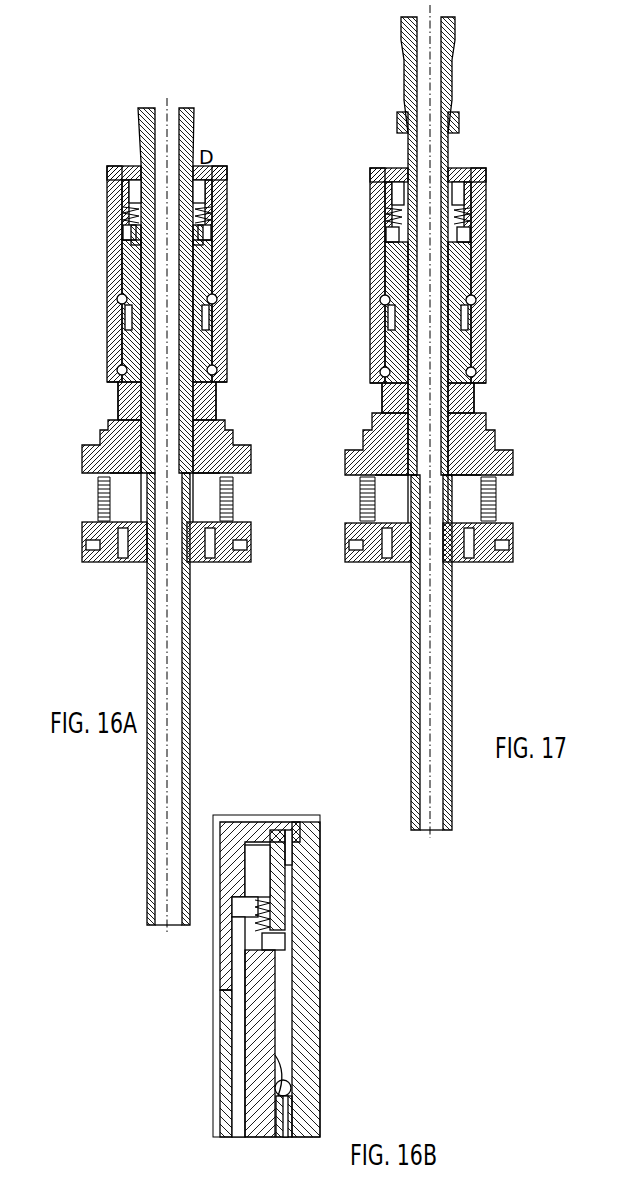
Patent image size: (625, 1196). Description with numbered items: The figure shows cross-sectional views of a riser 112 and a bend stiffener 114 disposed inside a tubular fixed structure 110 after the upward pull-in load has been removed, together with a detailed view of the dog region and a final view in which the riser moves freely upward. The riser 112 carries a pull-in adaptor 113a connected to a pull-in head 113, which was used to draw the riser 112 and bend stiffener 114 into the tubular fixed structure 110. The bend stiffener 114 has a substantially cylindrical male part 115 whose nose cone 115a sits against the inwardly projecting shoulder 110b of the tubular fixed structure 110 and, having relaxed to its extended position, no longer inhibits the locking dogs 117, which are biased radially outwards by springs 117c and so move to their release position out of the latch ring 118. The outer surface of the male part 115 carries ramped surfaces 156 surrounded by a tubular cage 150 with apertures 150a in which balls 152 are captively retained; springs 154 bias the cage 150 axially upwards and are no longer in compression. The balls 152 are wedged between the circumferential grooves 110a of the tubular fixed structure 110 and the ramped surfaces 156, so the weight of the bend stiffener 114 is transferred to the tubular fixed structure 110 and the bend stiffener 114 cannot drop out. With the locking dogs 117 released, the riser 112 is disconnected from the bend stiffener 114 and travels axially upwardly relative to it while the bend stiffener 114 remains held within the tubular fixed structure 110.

In FIG. 16A, the tubular fixed structure 110 is at (107, 322).
In FIG. 17, the tubular fixed structure 110 is at (499, 277).
In FIG. 16B, the tubular fixed structure 110 is at (319, 978).
In FIG. 16A, the circumferential grooves 110a is at (216, 302).
In FIG. 17, the circumferential grooves 110a is at (476, 303).
In FIG. 16A, the inwardly projecting shoulder 110b is at (118, 168).
In FIG. 17, the inwardly projecting shoulder 110b is at (385, 168).
In FIG. 16A, the riser 112 is at (191, 686).
In FIG. 17, the riser 112 is at (453, 680).
In FIG. 16B, the riser 112 is at (228, 1100).
In FIG. 16A, the pull-in head 113 is at (194, 116).
In FIG. 17, the pull-in head 113 is at (456, 46).
In FIG. 16B, the pull-in head 113 is at (234, 832).
In FIG. 16A, the pull-in adaptor 113a is at (213, 238).
In FIG. 17, the pull-in adaptor 113a is at (458, 130).
In FIG. 16B, the pull-in adaptor 113a is at (225, 990).
In FIG. 16A, the bend stiffener 114 is at (82, 550).
In FIG. 17, the bend stiffener 114 is at (514, 552).
In FIG. 16A, the male part 115 is at (207, 342).
In FIG. 17, the male part 115 is at (478, 347).
In FIG. 16B, the male part 115 is at (293, 1023).
In FIG. 16A, the nose cone 115a is at (222, 200).
In FIG. 17, the nose cone 115a is at (486, 198).
In FIG. 16B, the nose cone 115a is at (287, 877).
In FIG. 16A, the locking dogs 117 is at (121, 218).
In FIG. 17, the locking dogs 117 is at (482, 220).
In FIG. 16B, the locking dogs 117 is at (272, 920).
In FIG. 17, the springs 117c is at (390, 240).
In FIG. 16B, the springs 117c is at (245, 915).
In FIG. 16A, the latch ring 118 is at (115, 246).
In FIG. 17, the latch ring 118 is at (472, 241).
In FIG. 16B, the latch ring 118 is at (287, 945).
In FIG. 16A, the tubular cage 150 is at (216, 398).
In FIG. 17, the tubular cage 150 is at (474, 400).
In FIG. 16B, the tubular cage 150 is at (292, 1116).
In FIG. 16B, the apertures 150a is at (276, 1090).
In FIG. 16A, the balls 152 is at (217, 372).
In FIG. 17, the balls 152 is at (476, 373).
In FIG. 16B, the balls 152 is at (293, 1080).
In FIG. 16A, the springs 154 is at (98, 498).
In FIG. 17, the springs 154 is at (498, 500).
In FIG. 16A, the ramped surfaces 156 is at (118, 398).
In FIG. 17, the ramped surfaces 156 is at (384, 399).